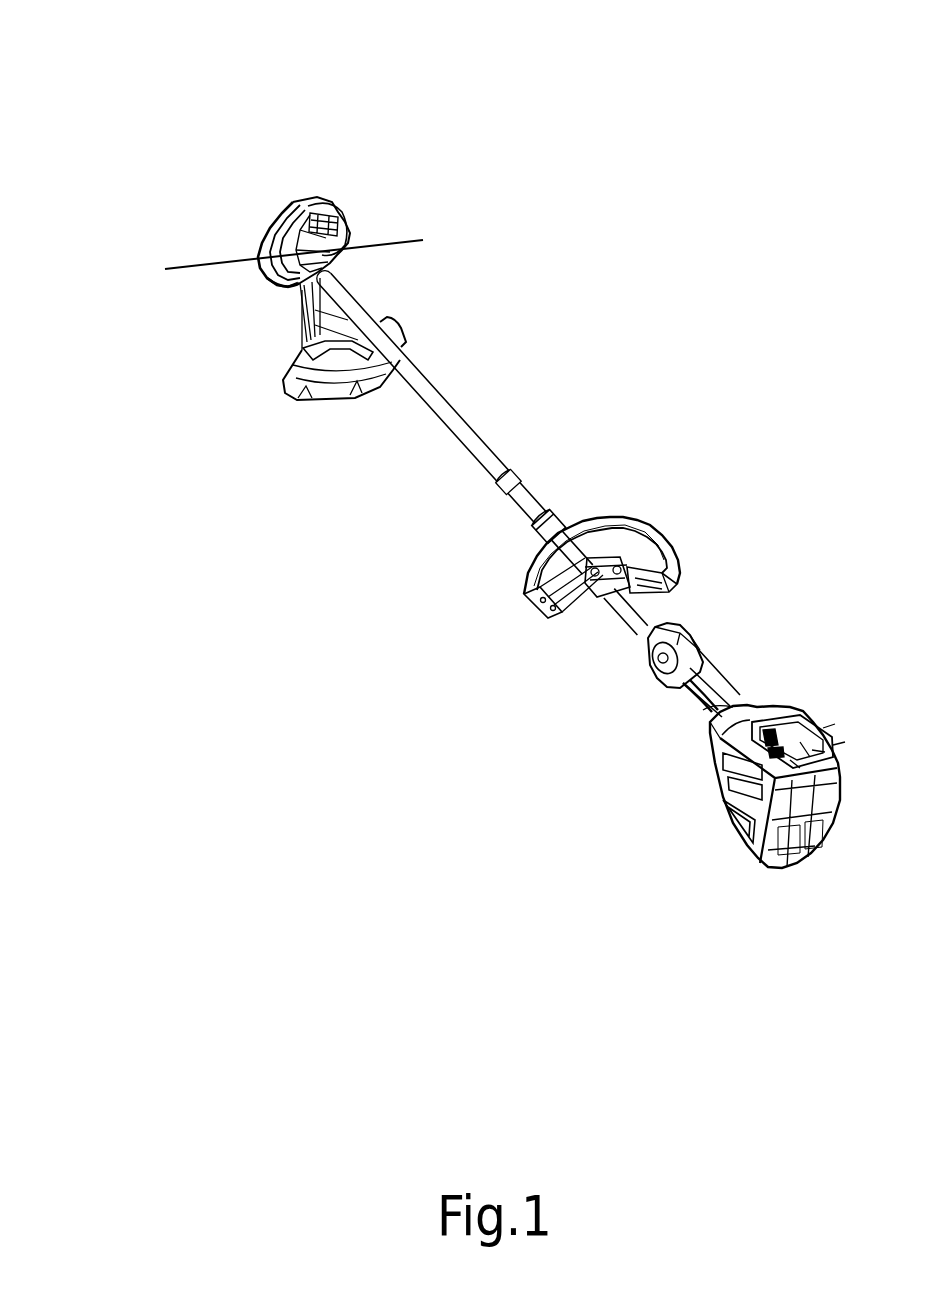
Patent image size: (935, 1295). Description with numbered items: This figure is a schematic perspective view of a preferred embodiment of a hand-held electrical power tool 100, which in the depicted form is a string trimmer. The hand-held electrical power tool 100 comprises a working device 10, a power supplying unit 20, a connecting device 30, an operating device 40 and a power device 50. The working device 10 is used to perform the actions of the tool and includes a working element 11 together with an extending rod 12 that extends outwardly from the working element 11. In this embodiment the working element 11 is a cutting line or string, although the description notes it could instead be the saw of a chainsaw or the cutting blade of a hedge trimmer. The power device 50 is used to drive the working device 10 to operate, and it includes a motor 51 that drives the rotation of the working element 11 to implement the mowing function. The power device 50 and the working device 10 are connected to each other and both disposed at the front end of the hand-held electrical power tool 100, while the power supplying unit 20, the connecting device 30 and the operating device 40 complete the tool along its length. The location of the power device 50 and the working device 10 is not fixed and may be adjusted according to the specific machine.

The hand-held electrical power tool 100 is at (80, 38).
The working device 10 is at (217, 343).
The working element 11 is at (205, 258).
The extending rod 12 is at (412, 373).
The power supplying unit 20 is at (664, 849).
The connecting device 30 is at (459, 516).
The operating device 40 is at (626, 716).
The power device 50 is at (382, 193).
The motor 51 is at (327, 203).